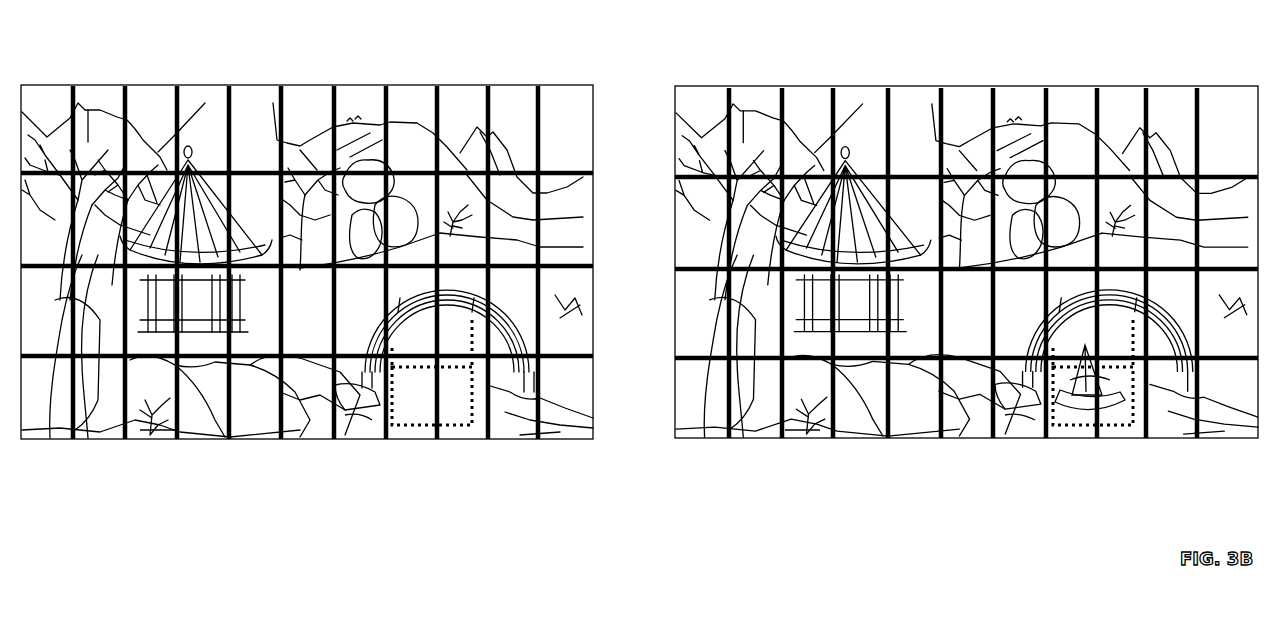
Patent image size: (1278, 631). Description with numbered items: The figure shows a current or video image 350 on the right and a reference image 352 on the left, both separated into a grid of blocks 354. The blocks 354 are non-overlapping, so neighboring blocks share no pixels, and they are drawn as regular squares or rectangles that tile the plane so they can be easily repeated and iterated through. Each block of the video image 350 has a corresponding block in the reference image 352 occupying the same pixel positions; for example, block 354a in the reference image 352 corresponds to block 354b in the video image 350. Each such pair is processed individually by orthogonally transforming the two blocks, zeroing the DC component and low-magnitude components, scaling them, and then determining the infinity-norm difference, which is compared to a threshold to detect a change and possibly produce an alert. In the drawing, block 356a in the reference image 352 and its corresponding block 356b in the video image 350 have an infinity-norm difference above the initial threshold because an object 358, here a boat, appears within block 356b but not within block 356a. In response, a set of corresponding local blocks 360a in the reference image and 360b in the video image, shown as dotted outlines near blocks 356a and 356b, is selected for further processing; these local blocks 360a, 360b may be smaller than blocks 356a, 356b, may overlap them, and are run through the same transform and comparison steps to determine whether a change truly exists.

The video image 350 is at (750, 83).
The reference image 352 is at (96, 80).
The blocks 354 is at (708, 440).
The block in reference image 354a is at (155, 443).
The block in video image 354b is at (797, 437).
The block in reference image 356a is at (353, 430).
The block in video image 356b is at (1047, 408).
The object 358 is at (1076, 398).
The local blocks in reference image 360a is at (408, 433).
The local blocks in video image 360b is at (1083, 425).